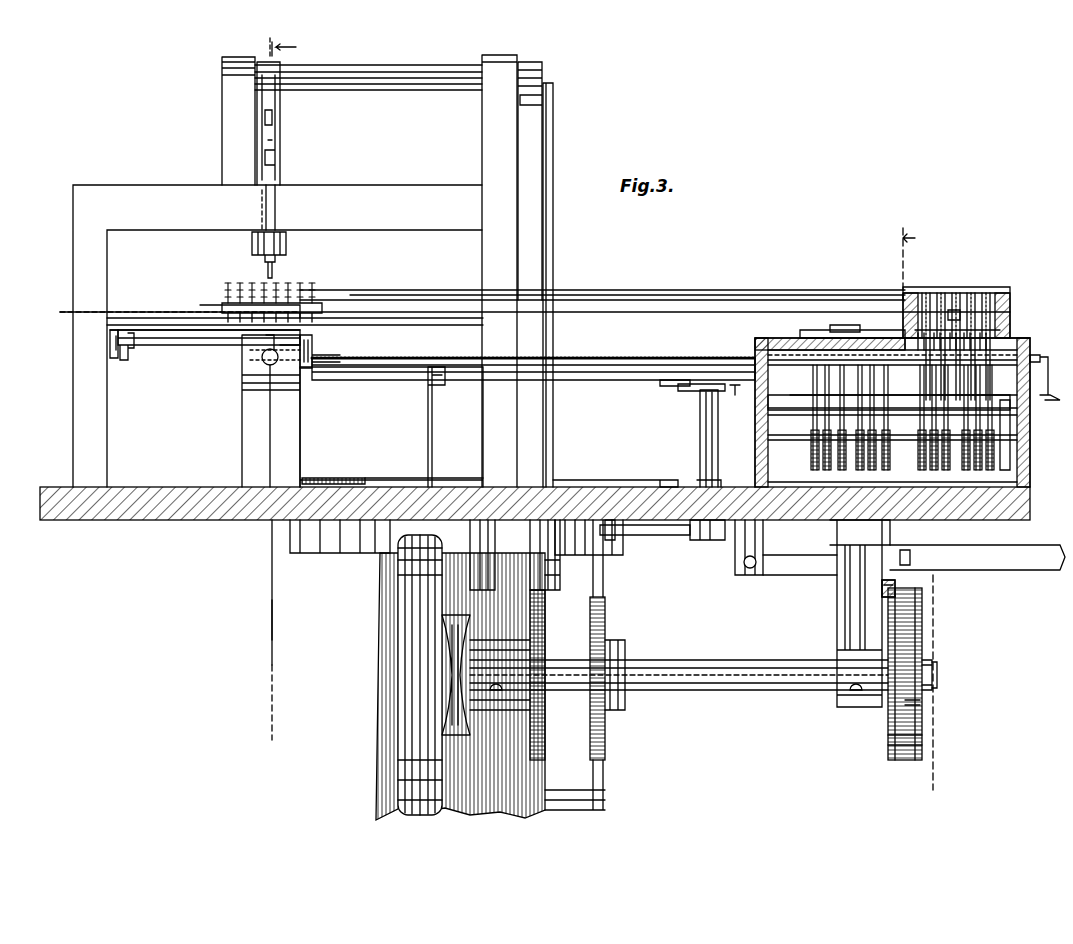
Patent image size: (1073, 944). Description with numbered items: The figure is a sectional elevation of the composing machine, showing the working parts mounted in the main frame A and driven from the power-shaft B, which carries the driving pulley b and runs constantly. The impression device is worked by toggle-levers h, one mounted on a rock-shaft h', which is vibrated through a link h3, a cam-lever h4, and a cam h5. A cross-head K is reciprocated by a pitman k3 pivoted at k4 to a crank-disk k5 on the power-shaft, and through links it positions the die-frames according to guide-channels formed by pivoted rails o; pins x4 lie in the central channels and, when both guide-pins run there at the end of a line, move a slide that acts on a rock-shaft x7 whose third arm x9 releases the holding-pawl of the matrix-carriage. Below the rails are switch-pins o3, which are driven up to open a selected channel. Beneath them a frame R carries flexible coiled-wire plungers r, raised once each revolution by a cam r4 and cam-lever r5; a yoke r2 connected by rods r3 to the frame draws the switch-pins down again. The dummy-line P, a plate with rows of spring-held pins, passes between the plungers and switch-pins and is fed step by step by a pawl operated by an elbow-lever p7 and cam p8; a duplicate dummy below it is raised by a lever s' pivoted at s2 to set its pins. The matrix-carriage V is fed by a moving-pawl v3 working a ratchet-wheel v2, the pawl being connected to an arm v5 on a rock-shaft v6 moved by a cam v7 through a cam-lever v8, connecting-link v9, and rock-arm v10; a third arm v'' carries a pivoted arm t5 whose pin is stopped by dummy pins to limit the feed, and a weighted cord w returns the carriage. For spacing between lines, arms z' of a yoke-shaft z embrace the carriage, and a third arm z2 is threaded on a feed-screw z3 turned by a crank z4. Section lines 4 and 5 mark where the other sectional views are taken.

The main frame A is at (535, 516).
The toggle-levers h is at (277, 134).
The rock-shaft h' is at (368, 87).
The link h3 is at (555, 437).
The cam-lever h4 is at (545, 580).
The cam h5 is at (545, 640).
The cross-head K is at (287, 248).
The section line 5 5 is at (280, 391).
The section line 4 4 is at (915, 508).
The weighted cord w is at (274, 630).
The yoke-shaft z is at (535, 347).
The arms z' is at (205, 347).
The third arm z2 is at (312, 368).
The feed-screw z3 is at (395, 366).
The crank z4 is at (1058, 352).
The carriage V is at (150, 347).
The ratchet-wheel v2 is at (330, 477).
The moving-pawl v3 is at (385, 478).
The arm v5 is at (618, 462).
The rock-shaft v6 is at (723, 438).
The third arm v'' is at (696, 408).
The cam v7 is at (605, 615).
The cam-lever v8 is at (614, 558).
The connecting-link v9 is at (640, 535).
The rock-arm v10 is at (690, 535).
The pins x4 is at (960, 318).
The rock-shaft x7 is at (662, 391).
The third arm x9 is at (433, 410).
The pivoted arm t5 is at (740, 400).
The frame R is at (783, 483).
The flexible plungers r is at (915, 448).
The yoke r2 is at (808, 332).
The rods r3 is at (995, 445).
The cam r4 is at (922, 640).
The cam-lever r5 is at (910, 557).
The dummy-line P is at (1000, 405).
The elbow-lever p7 is at (920, 597).
The cam p8 is at (888, 738).
The rails o is at (988, 296).
The switch-pins o3 is at (1020, 328).
The power-shaft B is at (679, 663).
The driving pulley b is at (462, 742).
The lever s' is at (800, 574).
The pivot s2 is at (750, 568).
The pitman k3 is at (932, 665).
The pivot k4 is at (937, 680).
The crank-disk k5 is at (936, 714).